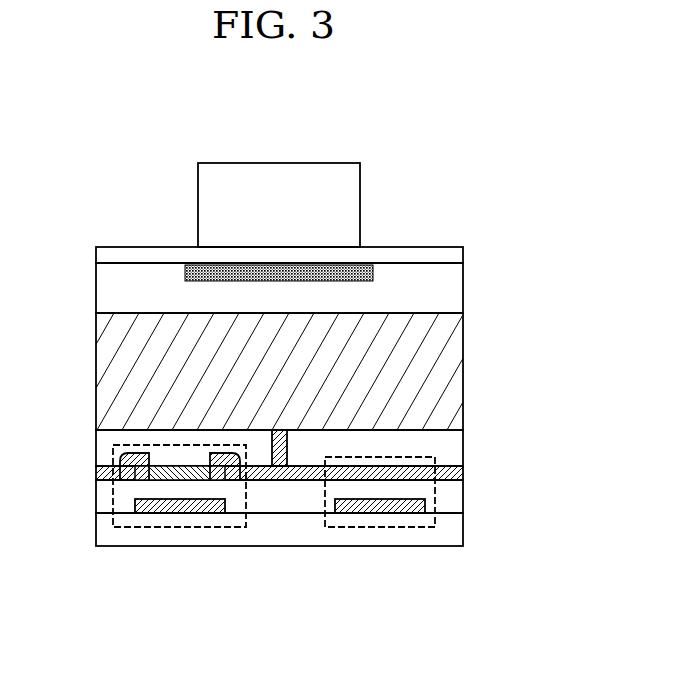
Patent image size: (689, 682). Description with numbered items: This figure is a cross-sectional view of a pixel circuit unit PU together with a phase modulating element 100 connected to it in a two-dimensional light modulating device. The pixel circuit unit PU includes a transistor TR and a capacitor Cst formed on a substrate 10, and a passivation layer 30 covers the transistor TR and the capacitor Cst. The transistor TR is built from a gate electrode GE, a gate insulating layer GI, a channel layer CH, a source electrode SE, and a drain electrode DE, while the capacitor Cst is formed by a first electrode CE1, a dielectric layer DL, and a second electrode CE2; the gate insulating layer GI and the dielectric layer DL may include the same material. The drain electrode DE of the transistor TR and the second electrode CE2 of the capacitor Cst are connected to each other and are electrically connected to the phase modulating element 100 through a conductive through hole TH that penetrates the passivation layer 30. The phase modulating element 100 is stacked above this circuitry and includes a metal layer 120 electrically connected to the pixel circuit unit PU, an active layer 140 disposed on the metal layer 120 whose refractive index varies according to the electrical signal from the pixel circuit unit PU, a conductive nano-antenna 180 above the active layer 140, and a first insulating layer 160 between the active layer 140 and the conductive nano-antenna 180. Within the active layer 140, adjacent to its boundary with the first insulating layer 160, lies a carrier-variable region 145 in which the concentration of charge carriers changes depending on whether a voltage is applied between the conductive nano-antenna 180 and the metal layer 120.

The phase modulating element 100 is at (300, 296).
The conductive nano-antenna 180 is at (345, 203).
The first insulating layer 160 is at (457, 254).
The carrier-variable region 145 is at (373, 285).
The active layer 140 is at (443, 298).
The metal layer 120 is at (271, 371).
The pixel circuit unit PU is at (311, 538).
The passivation layer 30 is at (103, 450).
The substrate 10 is at (105, 531).
The gate insulating layer GI is at (195, 488).
The conductive through hole TH is at (280, 457).
The transistor TR is at (175, 543).
The channel layer CH is at (158, 482).
The source electrode SE is at (126, 470).
The drain electrode DE is at (228, 480).
The gate electrode GE is at (177, 498).
The capacitor Cst is at (391, 551).
The first electrode CE1 is at (367, 503).
The second electrode CE2 is at (348, 475).
The dielectric layer DL is at (385, 490).